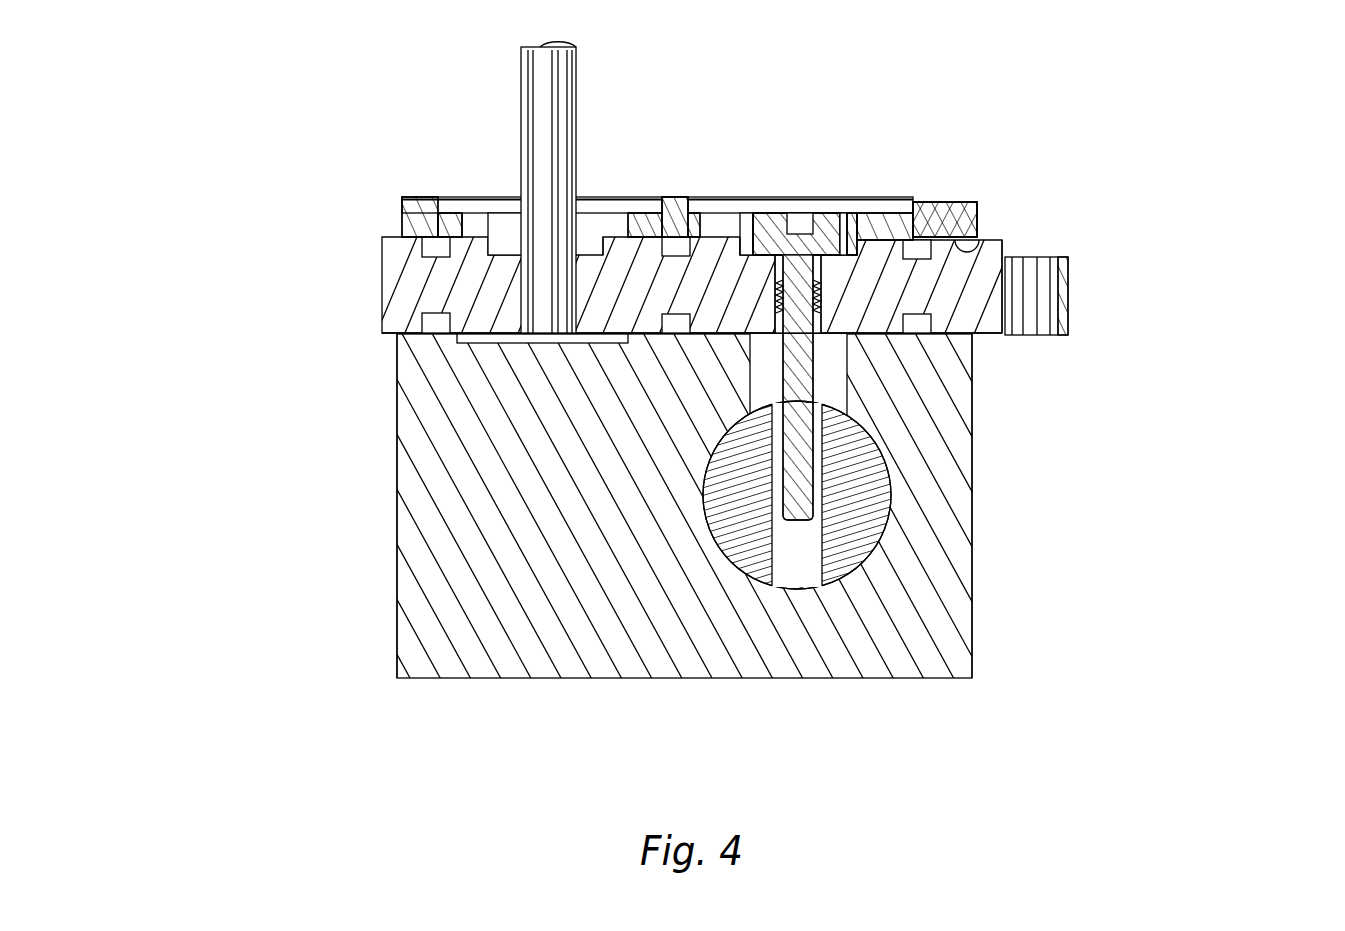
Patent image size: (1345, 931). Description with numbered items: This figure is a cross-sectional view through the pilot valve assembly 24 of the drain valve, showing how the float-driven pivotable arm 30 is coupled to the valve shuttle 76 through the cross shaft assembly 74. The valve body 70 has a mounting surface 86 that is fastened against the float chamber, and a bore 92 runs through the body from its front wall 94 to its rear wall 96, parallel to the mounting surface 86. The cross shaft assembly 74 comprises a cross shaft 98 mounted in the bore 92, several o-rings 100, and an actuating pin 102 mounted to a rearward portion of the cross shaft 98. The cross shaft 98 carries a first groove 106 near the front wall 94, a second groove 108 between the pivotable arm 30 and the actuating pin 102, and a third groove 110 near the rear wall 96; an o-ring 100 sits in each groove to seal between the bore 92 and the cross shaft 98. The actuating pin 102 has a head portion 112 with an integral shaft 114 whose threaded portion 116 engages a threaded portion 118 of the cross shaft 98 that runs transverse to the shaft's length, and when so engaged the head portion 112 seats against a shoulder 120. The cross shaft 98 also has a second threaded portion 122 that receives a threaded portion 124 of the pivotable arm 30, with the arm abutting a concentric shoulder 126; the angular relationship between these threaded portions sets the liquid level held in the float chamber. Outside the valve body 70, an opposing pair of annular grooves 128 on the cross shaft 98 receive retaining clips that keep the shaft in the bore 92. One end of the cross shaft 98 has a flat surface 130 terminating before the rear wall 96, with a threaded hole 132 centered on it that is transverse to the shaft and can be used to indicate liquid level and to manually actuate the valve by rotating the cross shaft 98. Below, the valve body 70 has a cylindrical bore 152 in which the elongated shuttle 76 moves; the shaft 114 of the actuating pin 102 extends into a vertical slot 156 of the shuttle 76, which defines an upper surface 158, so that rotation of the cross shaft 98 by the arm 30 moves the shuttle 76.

The pilot valve assembly 24 is at (1152, 490).
The pivotable arm 30 is at (578, 75).
The valve body 70 is at (975, 625).
The cross shaft assembly 74 is at (225, 307).
The shuttle 76 is at (880, 520).
The mounting surface 86 is at (410, 198).
The bore 92 is at (998, 240).
The front wall 94 is at (397, 500).
The rear wall 96 is at (975, 447).
The cross shaft 98 is at (403, 275).
The o-rings 100 is at (680, 225).
The actuating pin 102 is at (770, 240).
The first groove 106 is at (440, 228).
The second groove 108 is at (685, 205).
The third groove 110 is at (950, 225).
The head portion 112 is at (820, 240).
The integral shaft 114 is at (755, 354).
The threaded portion 116 is at (845, 250).
The threaded portion 118 is at (862, 232).
The shoulder 120 is at (756, 232).
The second threaded portion 122 is at (604, 240).
The threaded portion 124 is at (545, 240).
The shoulder 126 is at (492, 222).
The annular grooves 128 is at (397, 333).
The flat surface 130 is at (1052, 257).
The threaded hole 132 is at (1048, 300).
The cylindrical bore 152 is at (822, 545).
The vertical slot 156 is at (775, 545).
The upper surface 158 is at (850, 407).